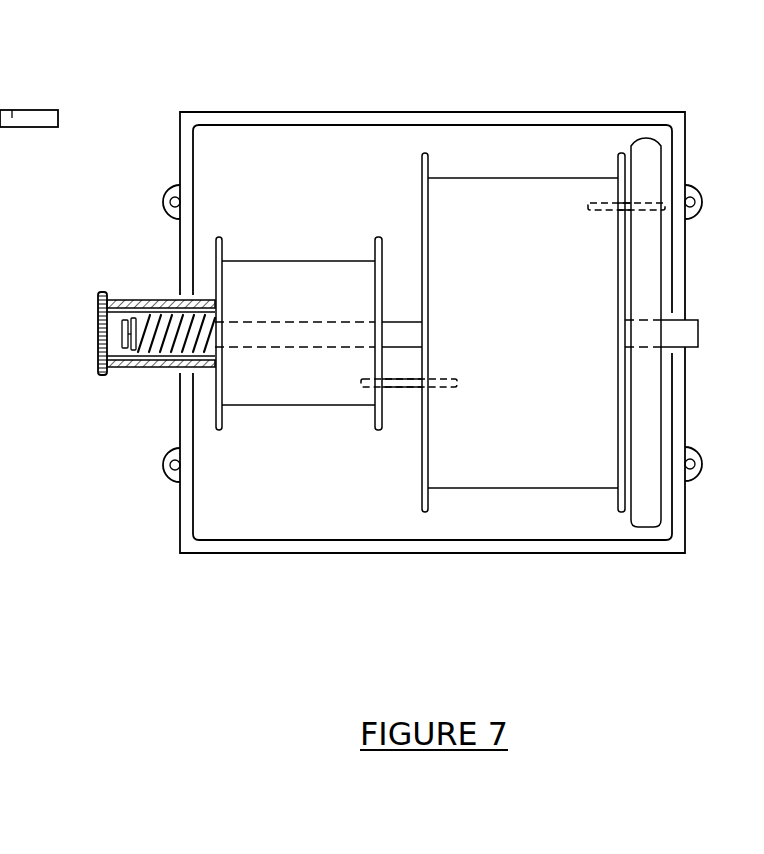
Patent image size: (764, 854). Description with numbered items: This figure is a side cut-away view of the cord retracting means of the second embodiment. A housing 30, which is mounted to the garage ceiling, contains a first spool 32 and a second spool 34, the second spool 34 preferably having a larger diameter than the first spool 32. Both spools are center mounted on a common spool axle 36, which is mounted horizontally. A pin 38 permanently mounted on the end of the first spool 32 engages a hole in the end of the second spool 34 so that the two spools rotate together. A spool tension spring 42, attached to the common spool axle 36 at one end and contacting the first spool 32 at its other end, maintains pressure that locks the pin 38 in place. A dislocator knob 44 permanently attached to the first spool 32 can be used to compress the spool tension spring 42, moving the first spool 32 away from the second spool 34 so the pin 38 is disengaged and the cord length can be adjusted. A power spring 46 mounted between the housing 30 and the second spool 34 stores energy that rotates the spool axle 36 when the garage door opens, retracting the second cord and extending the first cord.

The housing 30 is at (432, 111).
The first spool 32 is at (213, 428).
The second spool 34 is at (424, 516).
The common spool axle 36 is at (698, 319).
The pin 38 is at (402, 389).
The spool tension spring 42 is at (165, 313).
The dislocator knob 44 is at (100, 292).
The power spring 46 is at (643, 529).